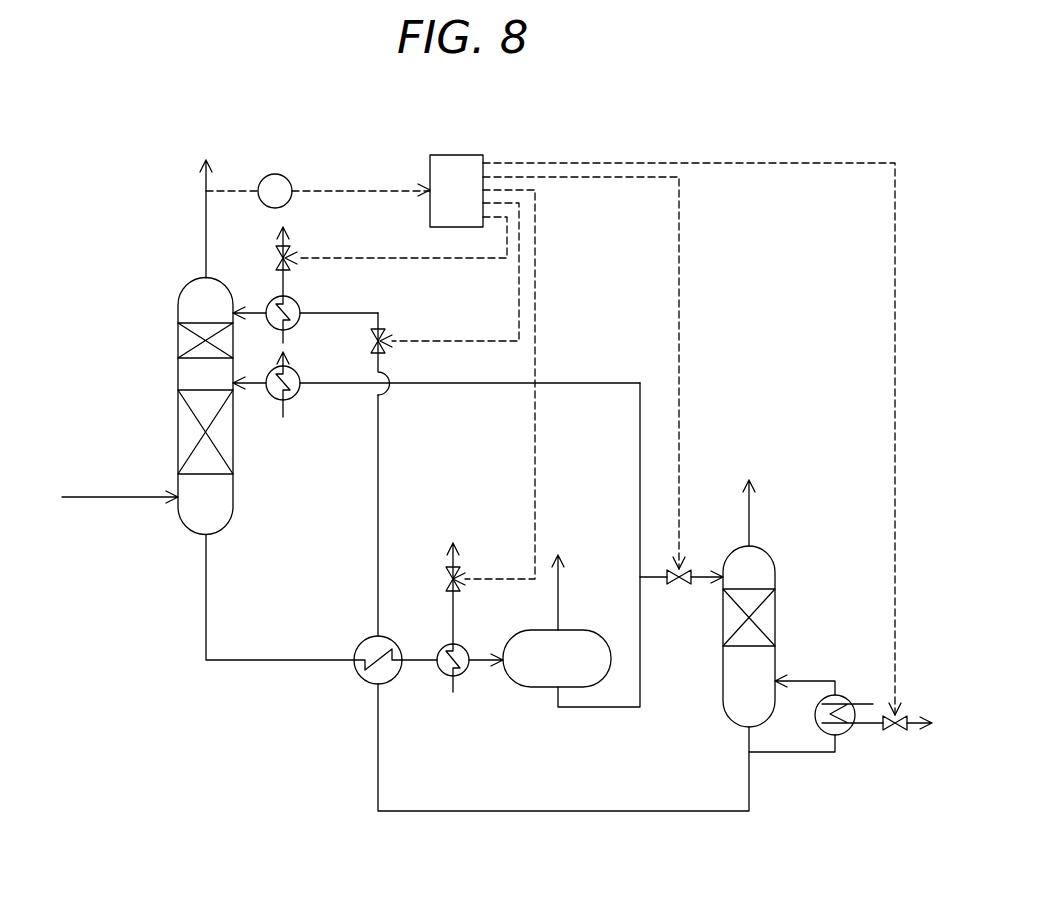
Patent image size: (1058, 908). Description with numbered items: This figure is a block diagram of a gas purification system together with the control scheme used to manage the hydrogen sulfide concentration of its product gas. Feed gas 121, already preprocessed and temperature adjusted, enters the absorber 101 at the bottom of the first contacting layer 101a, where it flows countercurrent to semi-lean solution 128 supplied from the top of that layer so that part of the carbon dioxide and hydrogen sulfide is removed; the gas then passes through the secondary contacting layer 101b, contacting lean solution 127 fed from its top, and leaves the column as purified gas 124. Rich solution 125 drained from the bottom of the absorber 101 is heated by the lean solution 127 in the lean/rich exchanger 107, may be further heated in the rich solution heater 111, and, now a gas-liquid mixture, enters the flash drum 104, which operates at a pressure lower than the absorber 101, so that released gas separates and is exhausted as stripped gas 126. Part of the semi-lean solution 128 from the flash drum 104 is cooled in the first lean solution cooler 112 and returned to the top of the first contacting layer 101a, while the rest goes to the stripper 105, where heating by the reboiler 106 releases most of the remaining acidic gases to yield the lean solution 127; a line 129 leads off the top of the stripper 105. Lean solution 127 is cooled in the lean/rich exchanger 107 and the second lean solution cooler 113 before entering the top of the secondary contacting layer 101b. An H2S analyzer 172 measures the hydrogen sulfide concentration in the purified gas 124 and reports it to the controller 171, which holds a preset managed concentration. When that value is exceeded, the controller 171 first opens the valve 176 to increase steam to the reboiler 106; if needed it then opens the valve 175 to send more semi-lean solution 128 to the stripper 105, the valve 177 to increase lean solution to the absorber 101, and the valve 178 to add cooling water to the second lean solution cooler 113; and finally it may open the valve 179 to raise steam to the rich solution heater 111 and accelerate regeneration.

The absorber 101 is at (178, 300).
The first contacting layer 101a is at (182, 423).
The secondary contacting layer 101b is at (182, 341).
The flash drum 104 is at (532, 630).
The stripper 105 is at (776, 650).
The reboiler 106 is at (850, 700).
The lean/rich exchanger 107 is at (360, 676).
The rich solution heater 111 is at (444, 650).
The first lean solution cooler 112 is at (296, 372).
The second lean solution cooler 113 is at (296, 302).
The feed gas 121 is at (106, 497).
The purified gas 124 is at (206, 240).
The rich solution 125 is at (237, 662).
The stripped gas 126 is at (558, 598).
The lean solution 127 is at (560, 811).
The semi-lean solution 128 is at (600, 707).
The overhead outlet line 129 is at (750, 518).
The controller 171 is at (457, 155).
The H2S analyzer 172 is at (288, 178).
The valve 175 is at (680, 590).
The valve 176 is at (896, 735).
The valve 177 is at (386, 334).
The valve 178 is at (282, 258).
The valve 179 is at (446, 581).